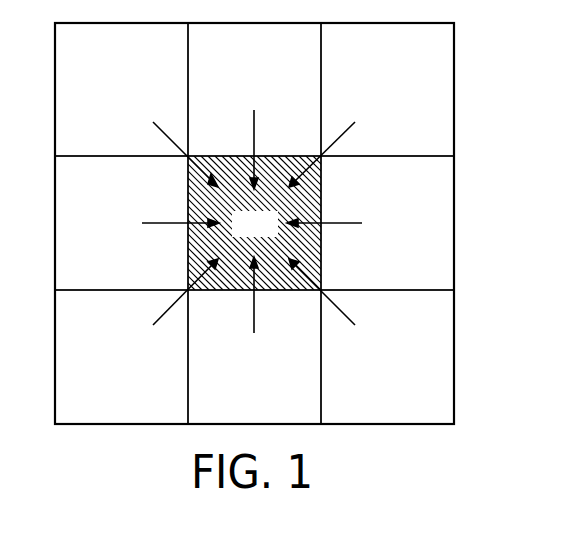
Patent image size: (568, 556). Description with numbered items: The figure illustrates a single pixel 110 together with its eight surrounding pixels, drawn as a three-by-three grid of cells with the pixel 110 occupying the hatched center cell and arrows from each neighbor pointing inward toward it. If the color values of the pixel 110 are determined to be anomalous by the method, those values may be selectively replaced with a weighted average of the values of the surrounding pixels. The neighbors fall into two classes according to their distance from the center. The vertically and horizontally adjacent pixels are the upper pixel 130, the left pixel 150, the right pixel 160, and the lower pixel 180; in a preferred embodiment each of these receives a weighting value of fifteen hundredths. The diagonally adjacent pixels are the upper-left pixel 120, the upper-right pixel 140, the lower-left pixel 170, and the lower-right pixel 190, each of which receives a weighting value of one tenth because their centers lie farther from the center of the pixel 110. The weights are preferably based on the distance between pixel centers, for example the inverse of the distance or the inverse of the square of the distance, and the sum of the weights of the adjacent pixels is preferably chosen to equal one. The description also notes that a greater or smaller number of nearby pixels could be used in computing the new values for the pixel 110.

The pixel 110 is at (236, 233).
The diagonally adjacent pixel 120 is at (103, 99).
The vertically adjacent pixel 130 is at (234, 87).
The diagonally adjacent pixel 140 is at (368, 99).
The horizontally adjacent pixel 150 is at (94, 233).
The horizontally adjacent pixel 160 is at (377, 234).
The diagonally adjacent pixel 170 is at (103, 367).
The vertically adjacent pixel 180 is at (235, 380).
The diagonally adjacent pixel 190 is at (368, 367).